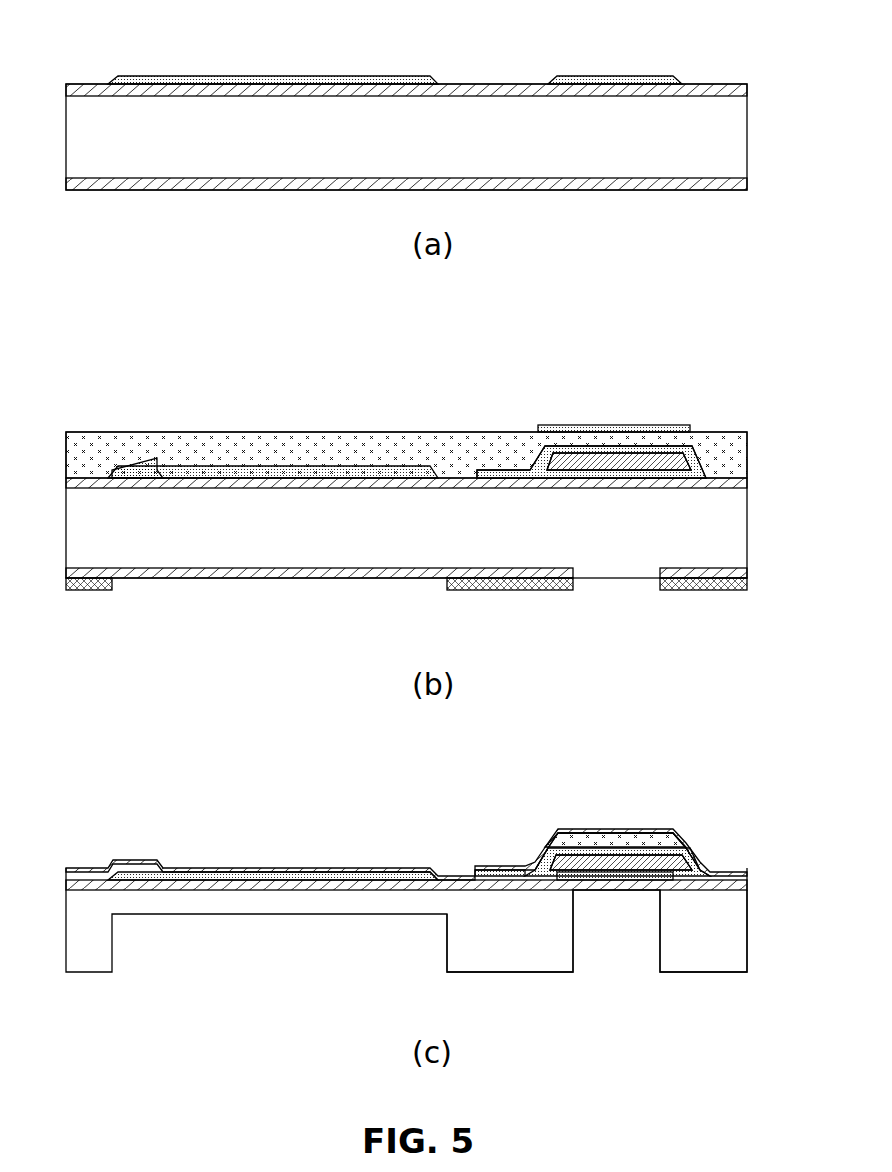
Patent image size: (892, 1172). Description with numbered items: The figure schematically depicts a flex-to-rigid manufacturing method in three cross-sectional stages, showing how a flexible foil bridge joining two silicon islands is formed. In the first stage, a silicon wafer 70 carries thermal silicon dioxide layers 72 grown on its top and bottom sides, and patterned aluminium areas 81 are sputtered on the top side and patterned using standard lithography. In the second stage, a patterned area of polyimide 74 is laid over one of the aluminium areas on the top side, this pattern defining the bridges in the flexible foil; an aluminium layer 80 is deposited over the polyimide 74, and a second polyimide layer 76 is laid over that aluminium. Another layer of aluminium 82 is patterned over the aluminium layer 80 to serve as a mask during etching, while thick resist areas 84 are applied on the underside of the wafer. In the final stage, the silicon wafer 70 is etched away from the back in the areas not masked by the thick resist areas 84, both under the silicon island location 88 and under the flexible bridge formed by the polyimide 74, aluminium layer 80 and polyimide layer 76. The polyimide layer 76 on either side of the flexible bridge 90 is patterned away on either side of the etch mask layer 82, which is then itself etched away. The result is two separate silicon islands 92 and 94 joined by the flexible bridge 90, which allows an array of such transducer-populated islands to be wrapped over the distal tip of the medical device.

The silicon wafer 70 is at (740, 138).
The thermal silicon dioxide layer 72 is at (747, 87).
The patterned aluminium area 81 is at (275, 80).
The second polyimide layer 76 is at (406, 442).
The aluminium etch mask layer 82 is at (612, 424).
The aluminium layer 80 is at (688, 446).
The polyimide area 74 is at (615, 472).
The thick resist area 84 is at (510, 592).
The silicon island location 88 is at (287, 856).
The flexible bridge 90 is at (666, 828).
The silicon island 92 is at (510, 974).
The silicon island 94 is at (697, 974).